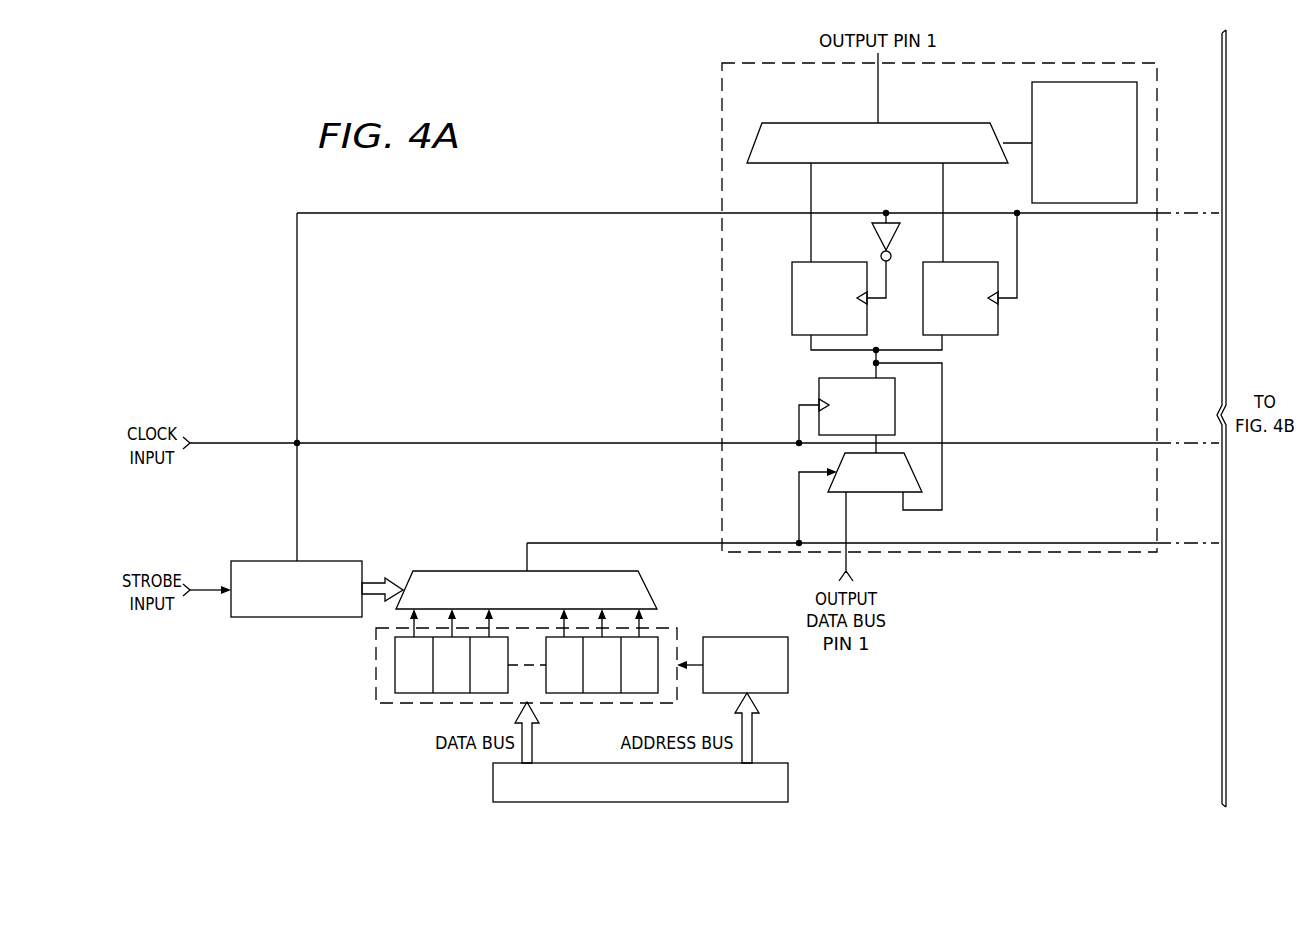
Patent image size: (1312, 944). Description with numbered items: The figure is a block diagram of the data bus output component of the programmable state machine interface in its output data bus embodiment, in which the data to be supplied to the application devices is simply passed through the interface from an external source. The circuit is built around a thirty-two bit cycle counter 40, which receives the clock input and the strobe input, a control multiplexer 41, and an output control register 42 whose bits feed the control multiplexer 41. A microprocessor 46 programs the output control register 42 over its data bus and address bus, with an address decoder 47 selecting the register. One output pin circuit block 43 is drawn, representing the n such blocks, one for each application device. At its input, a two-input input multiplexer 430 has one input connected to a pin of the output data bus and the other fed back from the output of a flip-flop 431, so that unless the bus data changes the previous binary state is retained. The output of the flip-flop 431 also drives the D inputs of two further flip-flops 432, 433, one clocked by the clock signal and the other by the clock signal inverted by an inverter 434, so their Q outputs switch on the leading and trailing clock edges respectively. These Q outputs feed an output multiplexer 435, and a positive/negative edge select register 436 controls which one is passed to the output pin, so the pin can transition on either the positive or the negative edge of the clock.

The 32-bit cycle counter 40 is at (296, 618).
The control multiplexer 41 is at (647, 588).
The output control register 42 is at (377, 665).
The output pin circuit block 43 is at (1024, 553).
The microprocessor 46 is at (788, 784).
The address decoder 47 is at (745, 637).
The input multiplexer 430 is at (876, 494).
The flip-flop 431 is at (819, 392).
The flip-flop 432 is at (792, 298).
The flip-flop 433 is at (998, 318).
The inverter 434 is at (872, 235).
The output multiplexer 435 is at (817, 122).
The positive/negative edge select register 436 is at (1032, 183).